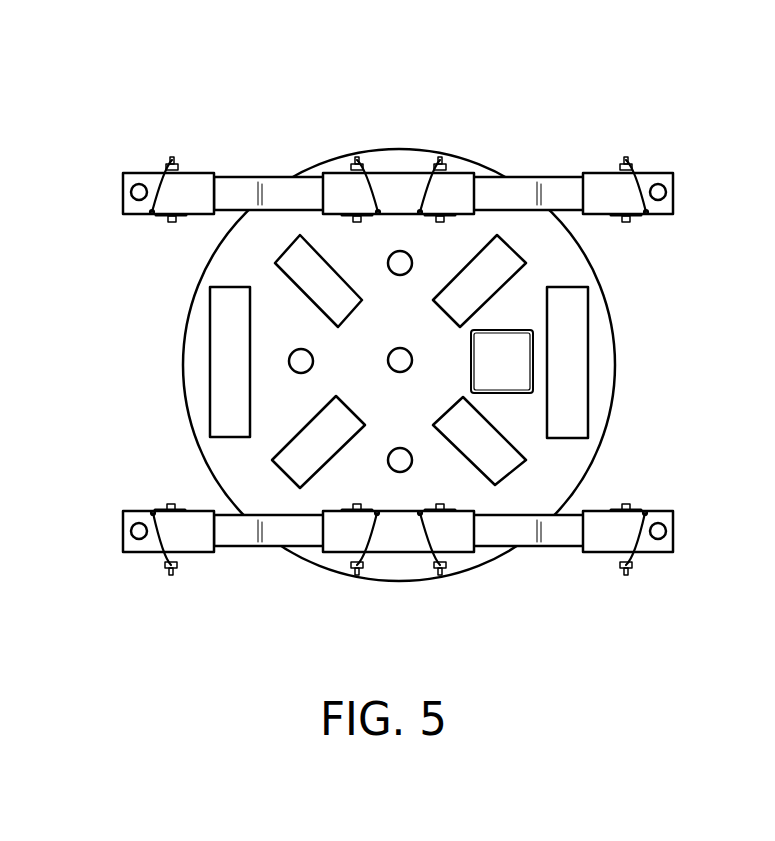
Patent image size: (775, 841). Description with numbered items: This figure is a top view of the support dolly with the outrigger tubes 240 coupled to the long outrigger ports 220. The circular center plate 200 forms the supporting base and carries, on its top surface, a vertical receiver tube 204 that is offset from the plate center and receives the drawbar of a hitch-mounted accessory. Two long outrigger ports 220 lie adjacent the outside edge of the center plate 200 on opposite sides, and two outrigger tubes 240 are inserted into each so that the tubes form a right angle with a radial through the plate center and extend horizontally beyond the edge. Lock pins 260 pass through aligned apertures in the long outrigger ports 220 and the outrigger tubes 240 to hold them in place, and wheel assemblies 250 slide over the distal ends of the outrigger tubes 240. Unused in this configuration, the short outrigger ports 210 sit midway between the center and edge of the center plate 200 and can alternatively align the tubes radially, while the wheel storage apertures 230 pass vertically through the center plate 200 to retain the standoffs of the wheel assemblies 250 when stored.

The center plate 200 is at (593, 455).
The vertical receiver tube 204 is at (533, 362).
The short outrigger ports 210 is at (285, 477).
The long outrigger ports 220 is at (460, 173).
The wheel storage apertures 230 is at (388, 262).
The outrigger tubes 240 is at (232, 177).
The wheel assemblies 250 is at (125, 173).
The lock pins 260 is at (176, 158).